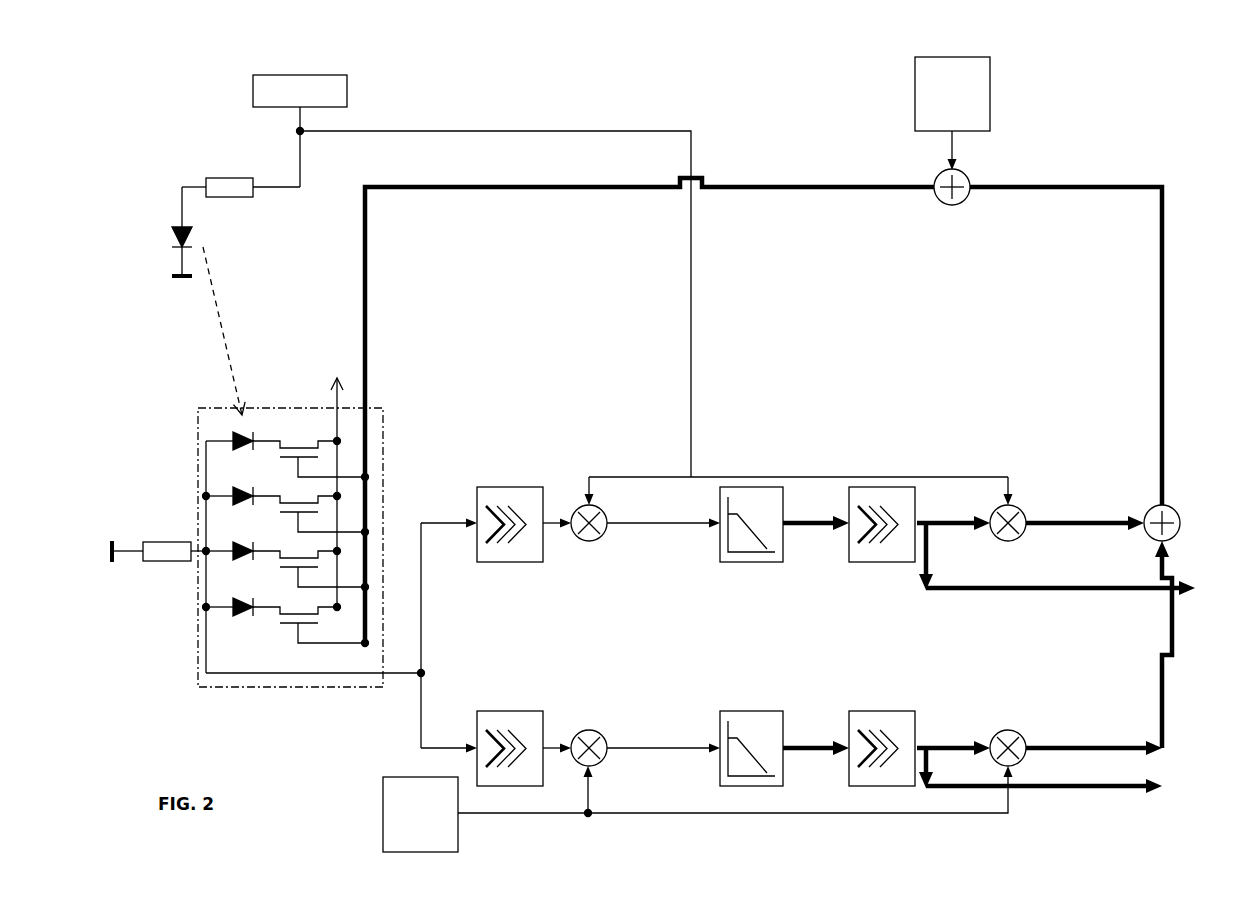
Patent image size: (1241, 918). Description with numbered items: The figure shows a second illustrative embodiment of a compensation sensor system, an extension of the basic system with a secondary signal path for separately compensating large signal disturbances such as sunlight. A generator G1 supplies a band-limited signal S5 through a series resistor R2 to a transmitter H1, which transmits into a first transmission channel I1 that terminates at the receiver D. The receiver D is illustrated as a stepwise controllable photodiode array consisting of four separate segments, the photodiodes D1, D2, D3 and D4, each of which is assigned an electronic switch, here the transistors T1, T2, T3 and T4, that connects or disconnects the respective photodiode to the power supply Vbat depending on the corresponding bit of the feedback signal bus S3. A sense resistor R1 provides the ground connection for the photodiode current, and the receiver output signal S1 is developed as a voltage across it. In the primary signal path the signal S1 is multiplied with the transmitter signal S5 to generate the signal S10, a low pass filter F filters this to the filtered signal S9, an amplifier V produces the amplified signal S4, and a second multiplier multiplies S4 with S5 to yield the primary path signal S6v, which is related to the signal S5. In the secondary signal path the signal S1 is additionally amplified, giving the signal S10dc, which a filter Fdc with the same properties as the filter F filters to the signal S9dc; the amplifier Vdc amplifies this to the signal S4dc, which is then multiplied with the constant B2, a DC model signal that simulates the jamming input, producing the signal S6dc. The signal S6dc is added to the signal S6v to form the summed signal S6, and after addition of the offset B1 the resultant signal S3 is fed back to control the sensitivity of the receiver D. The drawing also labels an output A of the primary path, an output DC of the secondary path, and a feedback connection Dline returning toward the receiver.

The generator G1 is at (300, 131).
The series resistor R2 is at (241, 175).
The transmitter H1 is at (160, 231).
The first transmission channel I1 is at (224, 331).
The power supply Vbat is at (320, 478).
The receiver D is at (289, 558).
The sense resistor R1 is at (159, 541).
The photodiode D1 is at (229, 434).
The photodiode D2 is at (229, 489).
The photodiode D3 is at (229, 544).
The photodiode D4 is at (229, 599).
The electronic switch T1 is at (311, 448).
The electronic switch T2 is at (311, 503).
The electronic switch T3 is at (311, 558).
The electronic switch T4 is at (311, 614).
The receiver output signal S1 is at (341, 636).
The feedback signal S3 is at (649, 396).
The transmitter signal S5 is at (656, 303).
The summed signal S6 is at (1066, 326).
The offset B1 is at (952, 131).
The constant B2 is at (698, 809).
The multiplied signal S10 is at (598, 524).
The filter F is at (751, 538).
The filtered signal S9 is at (816, 533).
The amplifier V is at (882, 538).
The amplified signal S4 is at (953, 553).
The primary path signal S6v is at (1085, 531).
The AC output A is at (1073, 588).
The feedback connection D Dline is at (1185, 644).
The secondary path multiplied signal S10dc is at (598, 748).
The filter Fdc is at (751, 762).
The secondary path filtered signal S9dc is at (816, 758).
The amplifier Vdc is at (882, 762).
The secondary path amplified signal S4dc is at (953, 764).
The secondary path compensation signal S6dc is at (1076, 755).
The DC output DC is at (1071, 786).